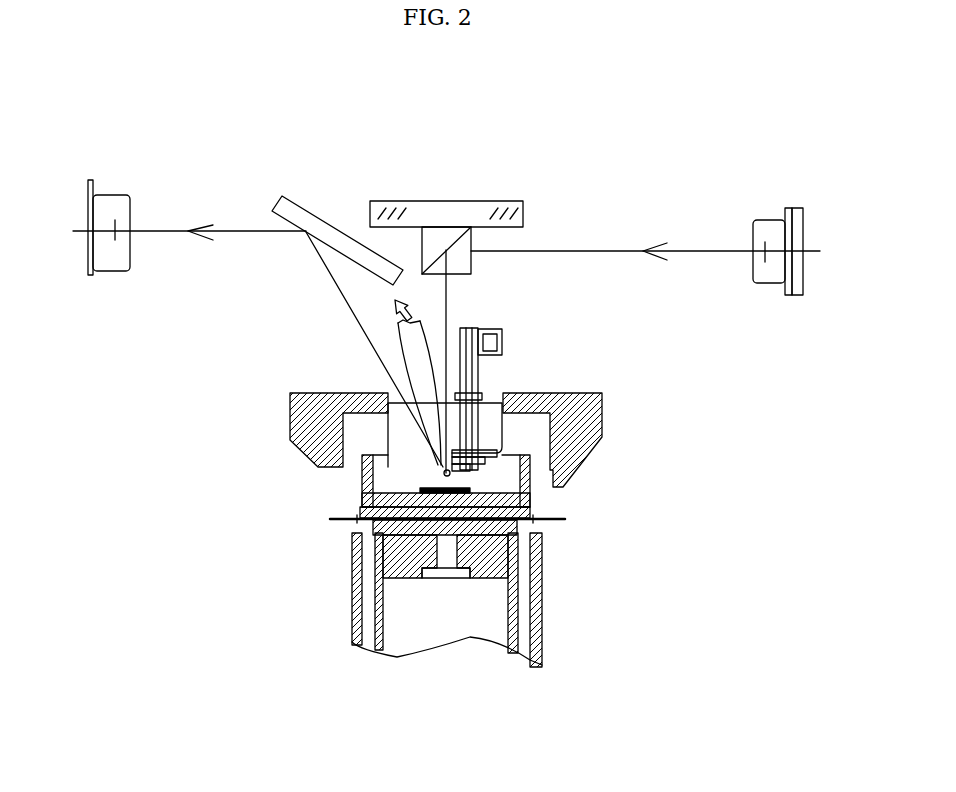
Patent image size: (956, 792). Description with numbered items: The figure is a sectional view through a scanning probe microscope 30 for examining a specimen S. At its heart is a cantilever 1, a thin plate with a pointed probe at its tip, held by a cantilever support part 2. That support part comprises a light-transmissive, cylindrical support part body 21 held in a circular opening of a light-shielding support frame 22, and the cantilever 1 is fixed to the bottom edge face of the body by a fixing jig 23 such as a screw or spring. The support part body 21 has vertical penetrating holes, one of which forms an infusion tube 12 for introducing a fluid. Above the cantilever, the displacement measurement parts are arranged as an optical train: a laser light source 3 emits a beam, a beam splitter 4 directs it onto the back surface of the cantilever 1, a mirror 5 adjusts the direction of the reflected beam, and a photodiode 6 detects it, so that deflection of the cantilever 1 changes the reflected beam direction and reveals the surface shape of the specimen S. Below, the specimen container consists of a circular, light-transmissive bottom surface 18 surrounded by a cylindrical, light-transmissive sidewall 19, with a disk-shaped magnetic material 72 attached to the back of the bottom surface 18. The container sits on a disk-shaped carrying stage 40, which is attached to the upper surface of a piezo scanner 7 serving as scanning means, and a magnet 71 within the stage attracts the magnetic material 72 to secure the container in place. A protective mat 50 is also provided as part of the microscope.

The cantilever 1 is at (465, 476).
The cantilever support part 2 is at (570, 381).
The laser light source 3 is at (767, 220).
The beam splitter 4 is at (433, 201).
The mirror 5 is at (318, 218).
The photodiode 6 is at (118, 193).
The piezo scanner 7 is at (543, 617).
The infusion tube 12 is at (418, 352).
The bottom surface 18 is at (485, 533).
The sidewall 19 is at (362, 490).
The support part body 21 is at (400, 427).
The support frame 22 is at (570, 468).
The fixing jig 23 is at (480, 368).
The scanning probe microscope 30 is at (503, 147).
The carrying stage 40 is at (530, 528).
The protective mat 50 is at (533, 515).
The magnet 71 is at (415, 577).
The magnetic material 72 is at (378, 548).
The specimen S is at (358, 527).